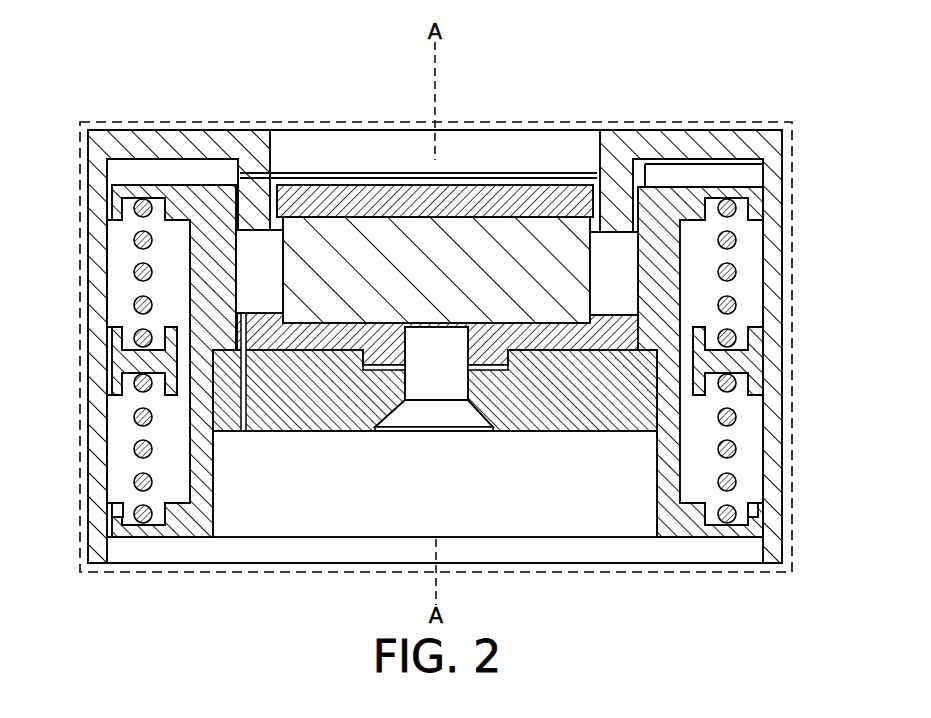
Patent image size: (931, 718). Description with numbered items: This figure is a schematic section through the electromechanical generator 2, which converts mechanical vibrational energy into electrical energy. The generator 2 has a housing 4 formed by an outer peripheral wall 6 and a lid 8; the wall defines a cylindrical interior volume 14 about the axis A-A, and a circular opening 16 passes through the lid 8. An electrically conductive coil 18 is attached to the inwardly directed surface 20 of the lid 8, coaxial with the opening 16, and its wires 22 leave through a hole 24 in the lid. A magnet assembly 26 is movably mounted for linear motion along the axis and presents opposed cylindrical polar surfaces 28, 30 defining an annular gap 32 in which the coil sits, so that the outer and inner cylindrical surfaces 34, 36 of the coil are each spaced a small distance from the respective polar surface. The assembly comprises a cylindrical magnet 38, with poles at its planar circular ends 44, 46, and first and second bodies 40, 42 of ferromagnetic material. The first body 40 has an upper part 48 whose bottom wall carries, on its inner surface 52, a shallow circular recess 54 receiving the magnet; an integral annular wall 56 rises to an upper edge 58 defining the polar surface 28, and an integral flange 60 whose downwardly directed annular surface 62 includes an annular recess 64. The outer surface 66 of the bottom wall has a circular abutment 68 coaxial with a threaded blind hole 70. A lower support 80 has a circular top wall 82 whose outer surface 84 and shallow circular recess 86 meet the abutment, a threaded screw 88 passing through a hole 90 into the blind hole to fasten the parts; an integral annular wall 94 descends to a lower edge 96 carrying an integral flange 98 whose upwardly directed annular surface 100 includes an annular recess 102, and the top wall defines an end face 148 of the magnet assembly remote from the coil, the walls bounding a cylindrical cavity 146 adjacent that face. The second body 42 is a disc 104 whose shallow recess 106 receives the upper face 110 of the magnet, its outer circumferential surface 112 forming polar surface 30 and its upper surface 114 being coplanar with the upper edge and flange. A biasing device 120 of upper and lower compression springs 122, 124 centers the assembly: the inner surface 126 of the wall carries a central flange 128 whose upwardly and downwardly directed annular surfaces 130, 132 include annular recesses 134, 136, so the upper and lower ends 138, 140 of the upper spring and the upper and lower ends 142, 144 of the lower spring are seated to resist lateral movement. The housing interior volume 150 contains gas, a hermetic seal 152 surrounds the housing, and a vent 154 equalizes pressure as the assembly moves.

The electromechanical generator 2 is at (700, 60).
The housing 4 is at (784, 246).
The outer peripheral wall 6 is at (784, 190).
The lid 8 is at (744, 126).
The cylindrical cross-section interior volume 14 is at (178, 550).
The circular opening 16 is at (282, 130).
The electrically conductive coil 18 is at (288, 226).
The inwardly directed surface 20 is at (578, 220).
The wires 22 is at (233, 128).
The hole 24 is at (240, 130).
The magnet assembly 26 is at (135, 292).
The outer cylindrical polar surface 28 is at (205, 130).
The inner cylindrical polar surface 30 is at (283, 178).
The annular gap 32 is at (620, 233).
The outer cylindrical surface of the coil 34 is at (248, 232).
The inner cylindrical surface of the coil 36 is at (276, 228).
The cylindrical magnet 38 is at (488, 217).
The first body of ferromagnetic material 40 is at (130, 246).
The second body of ferromagnetic material 42 is at (553, 176).
The planar circular end 44 is at (283, 353).
The planar circular end 46 is at (430, 174).
The upper part 48 is at (737, 272).
The inner surface of the bottom wall 52 is at (578, 352).
The shallow circular recess 54 is at (244, 425).
The integral annular wall 56 is at (706, 300).
The upper edge 58 is at (657, 130).
The integral flange 60 is at (701, 130).
The downwardly directed annular surface 62 is at (700, 222).
The annular recess 64 is at (768, 176).
The outer surface of the bottom wall 66 is at (303, 352).
The circular abutment 68 is at (388, 372).
The threaded blind hole 70 is at (456, 344).
The lower support 80 is at (742, 441).
The circular top wall 82 is at (573, 432).
The outer surface 84 is at (663, 357).
The shallow circular recess 86 is at (324, 353).
The threaded screw 88 is at (437, 431).
The hole 90 is at (458, 382).
The integral annular wall 94 is at (130, 453).
The lower edge 96 is at (206, 540).
The integral flange 98 is at (133, 540).
The upwardly directed annular surface 100 is at (108, 526).
The annular recess 102 is at (116, 486).
The disc 104 is at (455, 194).
The shallow recess 106 is at (580, 218).
The upper face of the magnet 110 is at (377, 214).
The outer circumferential surface 112 is at (612, 186).
The upper surface of the disc 114 is at (492, 210).
The biasing device 120 is at (742, 481).
The upper compression spring 122 is at (108, 223).
The lower compression spring 124 is at (108, 414).
The inner surface 126 is at (108, 326).
The central flange 128 is at (116, 359).
The upwardly directed annular surface 130 is at (168, 326).
The downwardly directed annular surface 132 is at (170, 398).
The annular recess 134 is at (745, 346).
The annular recess 136 is at (745, 383).
The upper end 138 is at (752, 208).
The lower end 140 is at (740, 332).
The upper end 142 is at (730, 412).
The lower end 144 is at (742, 504).
The cylindrical cavity 146 is at (506, 432).
The bottom plate 148 is at (565, 540).
The interior volume 150 is at (316, 540).
The hermetic seal 152 is at (106, 122).
The vent 154 is at (245, 314).